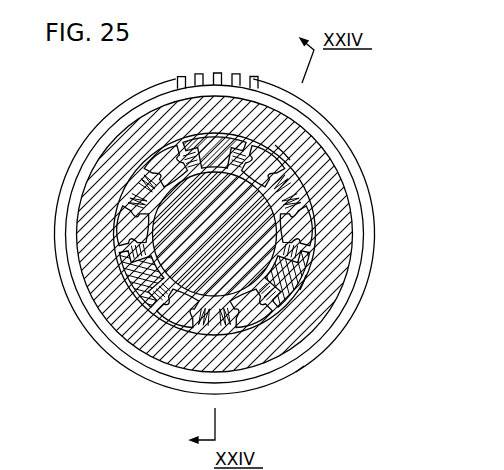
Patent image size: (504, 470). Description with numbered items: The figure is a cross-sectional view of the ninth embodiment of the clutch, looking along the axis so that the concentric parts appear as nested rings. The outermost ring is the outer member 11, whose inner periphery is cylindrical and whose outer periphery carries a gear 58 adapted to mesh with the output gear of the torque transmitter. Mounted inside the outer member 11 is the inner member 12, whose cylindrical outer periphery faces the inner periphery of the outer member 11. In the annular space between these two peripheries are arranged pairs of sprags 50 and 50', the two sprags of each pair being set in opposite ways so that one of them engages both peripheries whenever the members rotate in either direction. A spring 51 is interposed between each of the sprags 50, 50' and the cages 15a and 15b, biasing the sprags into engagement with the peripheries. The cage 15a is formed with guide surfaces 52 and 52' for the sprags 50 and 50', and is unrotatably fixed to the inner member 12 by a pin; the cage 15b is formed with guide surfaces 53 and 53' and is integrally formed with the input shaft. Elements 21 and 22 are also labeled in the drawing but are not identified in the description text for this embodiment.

The outer member 11 is at (337, 195).
The inner member 12 is at (178, 263).
The cage 15a is at (296, 372).
The cage 15b is at (212, 136).
The cage ring 21 is at (118, 268).
The wedge block 22 is at (197, 133).
The sprag 50 is at (137, 130).
The sprag 50' is at (261, 116).
The spring 51 is at (285, 153).
The guide surface 52 is at (100, 149).
The guide surface 52' is at (78, 217).
The guide surface 53 is at (350, 227).
The guide surface 53' is at (309, 323).
The gear 58 is at (371, 223).